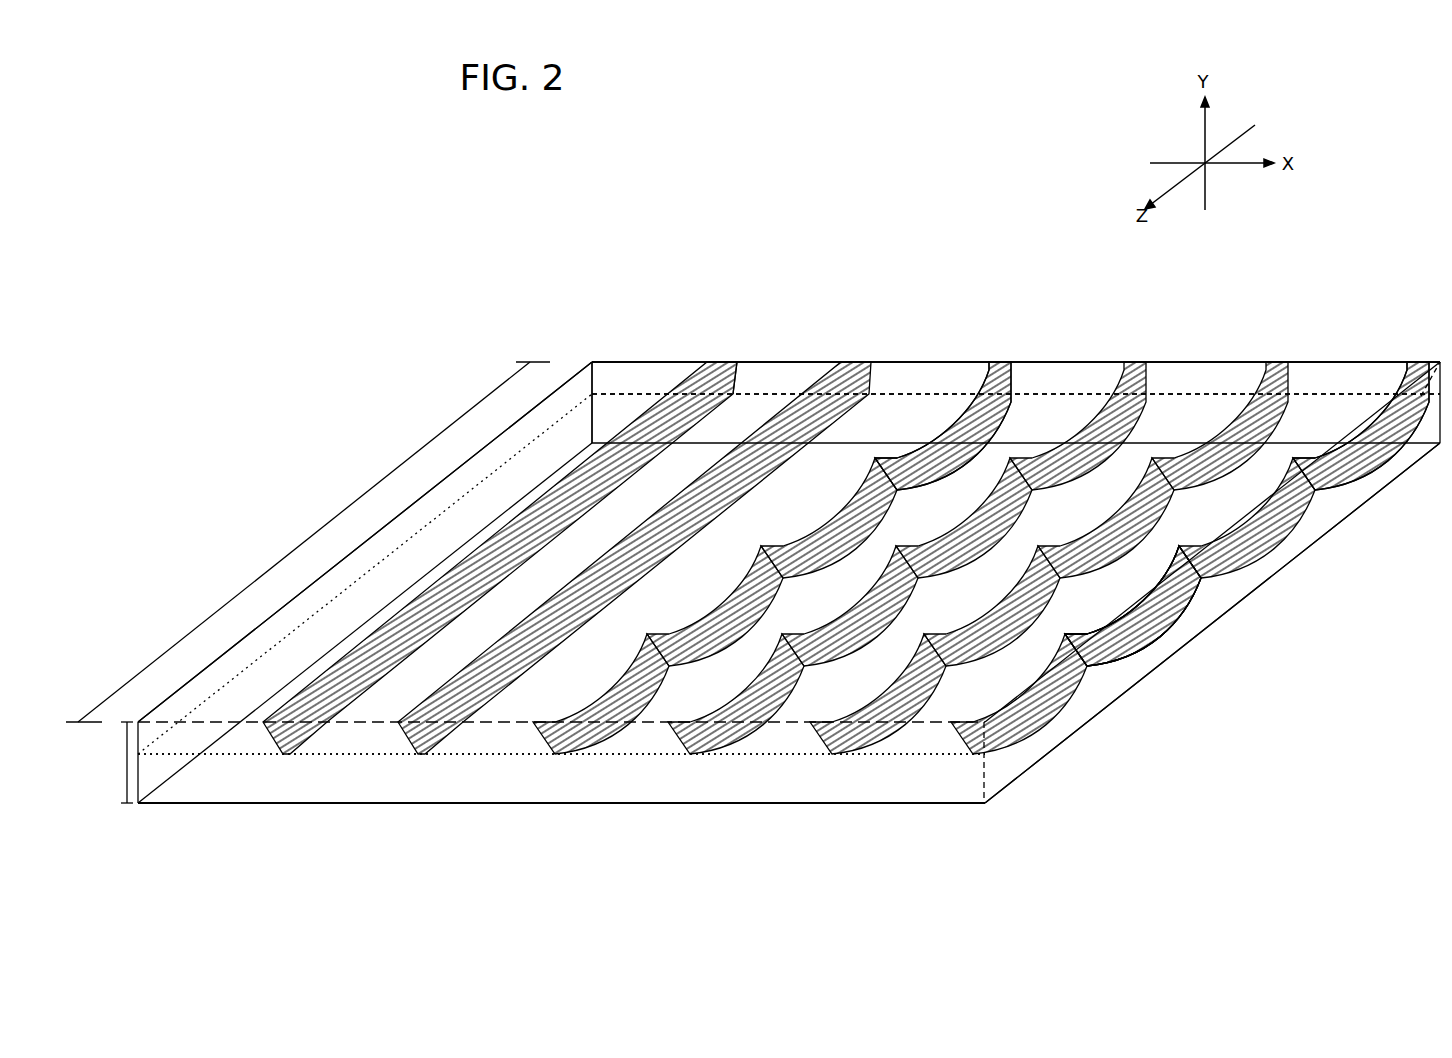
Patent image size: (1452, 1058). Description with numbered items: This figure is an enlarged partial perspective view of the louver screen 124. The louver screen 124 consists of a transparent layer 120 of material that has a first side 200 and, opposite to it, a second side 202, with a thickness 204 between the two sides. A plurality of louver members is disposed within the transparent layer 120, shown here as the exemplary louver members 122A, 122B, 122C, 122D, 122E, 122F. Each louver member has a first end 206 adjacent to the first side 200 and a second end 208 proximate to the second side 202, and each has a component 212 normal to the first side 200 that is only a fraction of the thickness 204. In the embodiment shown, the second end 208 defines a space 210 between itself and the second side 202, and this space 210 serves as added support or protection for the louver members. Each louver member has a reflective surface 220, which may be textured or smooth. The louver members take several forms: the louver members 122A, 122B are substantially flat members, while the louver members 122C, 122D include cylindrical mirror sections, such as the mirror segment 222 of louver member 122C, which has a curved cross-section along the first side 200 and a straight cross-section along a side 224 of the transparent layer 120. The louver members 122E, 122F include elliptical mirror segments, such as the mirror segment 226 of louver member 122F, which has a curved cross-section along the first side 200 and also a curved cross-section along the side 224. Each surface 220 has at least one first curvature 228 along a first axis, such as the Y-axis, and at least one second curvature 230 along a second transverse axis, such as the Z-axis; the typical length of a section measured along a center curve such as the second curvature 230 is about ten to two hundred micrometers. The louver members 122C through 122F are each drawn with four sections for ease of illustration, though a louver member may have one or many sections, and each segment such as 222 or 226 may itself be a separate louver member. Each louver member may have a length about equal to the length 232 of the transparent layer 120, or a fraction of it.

The transparent layer 120 is at (183, 820).
The louver member 122A is at (368, 684).
The louver member 122B is at (487, 700).
The louver member 122C is at (621, 715).
The louver member 122D is at (752, 725).
The louver member 122E is at (870, 729).
The louver member 122F is at (1035, 725).
The louver screen 124 is at (470, 252).
The first side 200 is at (608, 380).
The second side 202 is at (232, 805).
The thickness 204 is at (111, 762).
The first end 206 is at (716, 363).
The second end 208 is at (733, 394).
The space 210 is at (588, 396).
The component 212 is at (588, 364).
The reflective surface 220 is at (1128, 655).
The mirror segment 222 is at (950, 441).
The side 224 is at (905, 785).
The mirror segment 226 is at (1360, 430).
The first curvature 228 is at (1167, 630).
The second curvature 230 is at (1168, 602).
The length 232 is at (308, 542).